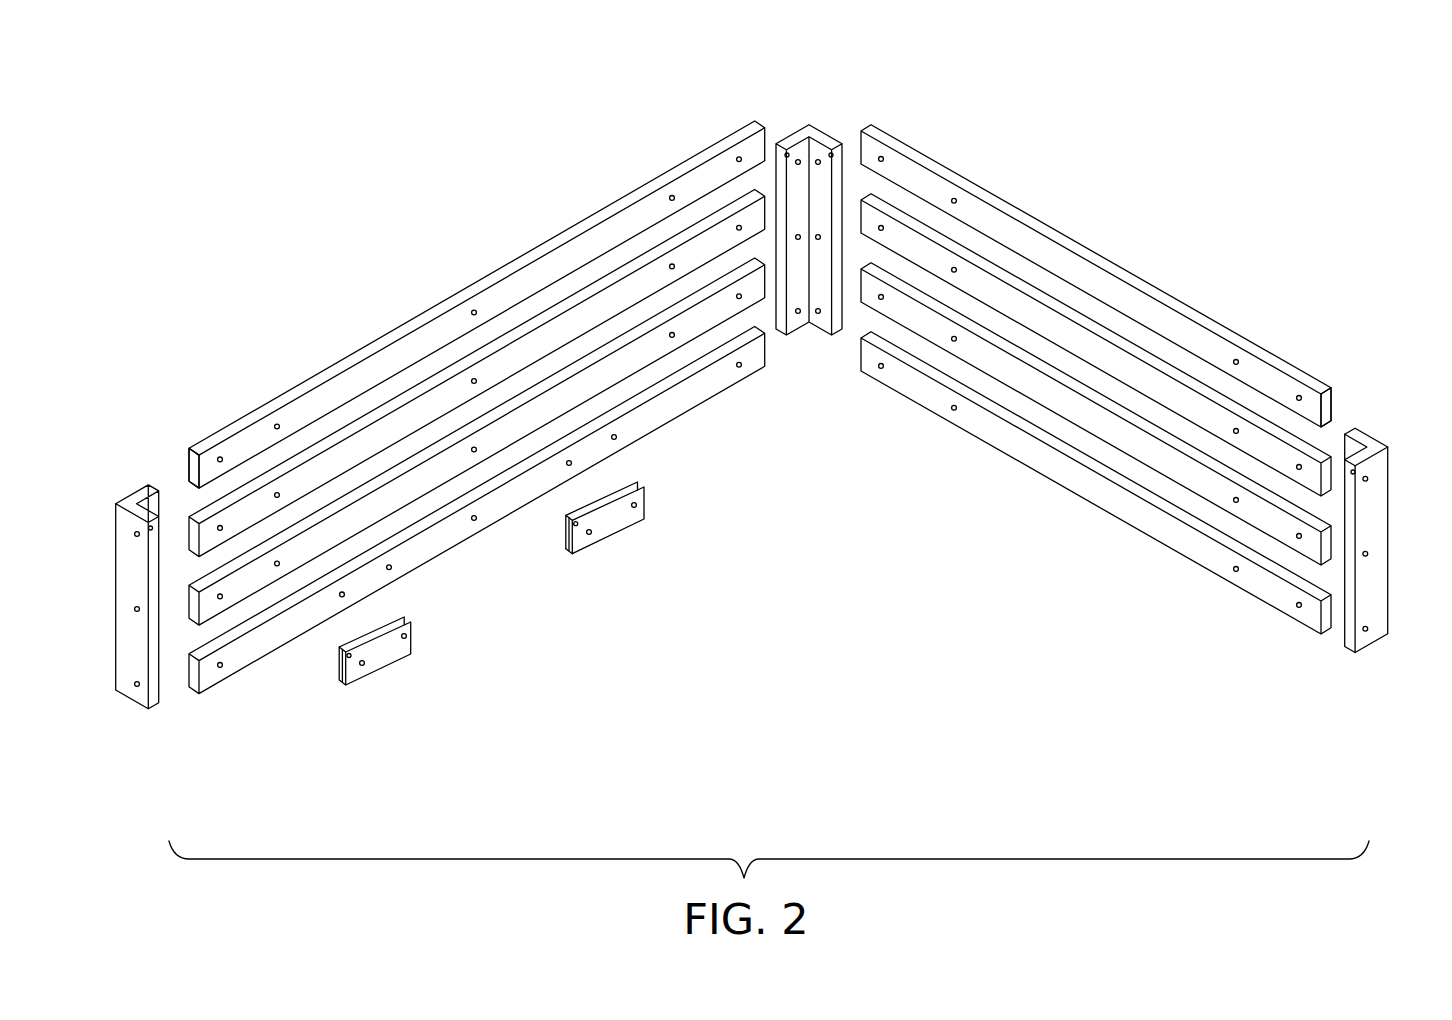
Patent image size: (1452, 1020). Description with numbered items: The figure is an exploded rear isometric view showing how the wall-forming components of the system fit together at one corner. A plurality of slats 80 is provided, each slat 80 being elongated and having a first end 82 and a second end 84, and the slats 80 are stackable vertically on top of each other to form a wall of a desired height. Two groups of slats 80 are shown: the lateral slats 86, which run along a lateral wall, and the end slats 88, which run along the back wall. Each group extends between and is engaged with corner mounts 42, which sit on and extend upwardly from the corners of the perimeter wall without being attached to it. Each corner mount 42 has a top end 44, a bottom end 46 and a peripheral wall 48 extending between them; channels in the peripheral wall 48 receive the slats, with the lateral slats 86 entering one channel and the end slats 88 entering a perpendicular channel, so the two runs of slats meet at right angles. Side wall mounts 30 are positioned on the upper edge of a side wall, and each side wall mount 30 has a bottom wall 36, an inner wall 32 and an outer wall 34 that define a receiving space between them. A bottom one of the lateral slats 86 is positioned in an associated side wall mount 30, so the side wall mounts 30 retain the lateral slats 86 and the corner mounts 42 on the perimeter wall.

The side wall mount 30 is at (541, 638).
The inner wall 32 is at (608, 522).
The outer wall 34 is at (562, 530).
The bottom wall 36 is at (565, 550).
The corner mount 42 is at (765, 362).
The top end 44 is at (1355, 430).
The bottom end 46 is at (1375, 652).
The peripheral wall 48 is at (1388, 560).
The slat 80 is at (737, 371).
The first end 82 is at (755, 115).
The second end 84 is at (188, 450).
The lateral slat 86 is at (563, 397).
The end slat 88 is at (1107, 358).